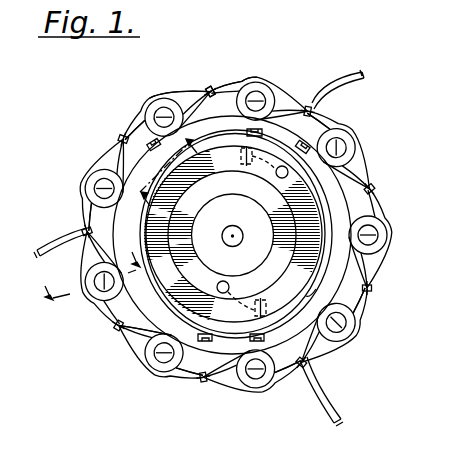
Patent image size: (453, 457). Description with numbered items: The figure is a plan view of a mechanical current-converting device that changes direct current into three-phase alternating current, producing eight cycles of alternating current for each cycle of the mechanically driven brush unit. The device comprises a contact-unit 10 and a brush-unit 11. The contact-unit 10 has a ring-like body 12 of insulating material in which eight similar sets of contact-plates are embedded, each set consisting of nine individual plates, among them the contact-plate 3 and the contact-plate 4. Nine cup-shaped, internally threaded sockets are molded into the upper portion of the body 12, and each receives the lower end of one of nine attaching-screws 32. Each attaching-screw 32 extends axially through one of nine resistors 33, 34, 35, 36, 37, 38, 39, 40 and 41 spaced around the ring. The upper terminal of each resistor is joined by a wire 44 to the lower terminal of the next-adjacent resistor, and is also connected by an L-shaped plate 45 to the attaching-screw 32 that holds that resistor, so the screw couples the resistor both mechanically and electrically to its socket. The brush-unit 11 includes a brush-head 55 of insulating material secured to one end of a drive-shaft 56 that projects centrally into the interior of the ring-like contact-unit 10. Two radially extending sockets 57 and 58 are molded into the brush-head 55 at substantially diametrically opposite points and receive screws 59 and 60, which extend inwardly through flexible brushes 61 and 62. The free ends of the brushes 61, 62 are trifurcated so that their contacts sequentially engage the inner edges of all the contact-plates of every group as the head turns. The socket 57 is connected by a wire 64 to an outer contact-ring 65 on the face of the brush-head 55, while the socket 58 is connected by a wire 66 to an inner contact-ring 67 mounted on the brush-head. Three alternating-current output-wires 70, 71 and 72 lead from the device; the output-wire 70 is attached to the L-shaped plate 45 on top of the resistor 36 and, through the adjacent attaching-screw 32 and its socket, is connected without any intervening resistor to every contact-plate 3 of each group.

The contact-unit 10 is at (211, 82).
The brush-unit 11 is at (319, 284).
The ring-like body 12 is at (216, 87).
The attaching-screw 32 is at (165, 98).
The resistor 33 is at (140, 337).
The resistor 34 is at (88, 212).
The resistor 35 is at (150, 128).
The resistor 36 is at (246, 79).
The resistor 37 is at (330, 115).
The resistor 38 is at (390, 215).
The resistor 39 is at (374, 307).
The resistor 40 is at (287, 380).
The resistor 41 is at (184, 384).
The wire 44 is at (100, 167).
The L-shaped plate 45 is at (122, 148).
The brush-head 55 is at (158, 311).
The drive-shaft 56 is at (242, 228).
The socket 57 is at (240, 157).
The socket 58 is at (262, 310).
The screw 59 is at (263, 134).
The screw 60 is at (216, 341).
The flexible brush 61 is at (215, 128).
The flexible brush 62 is at (269, 335).
The wire 64 is at (270, 172).
The outer contact-ring 65 is at (322, 215).
The wire 66 is at (230, 287).
The inner contact-ring 67 is at (271, 259).
The alternating-current output-wire 70 is at (331, 84).
The alternating-current output-wire 71 is at (339, 405).
The alternating-current output-wire 72 is at (56, 239).
The contact-plate 3 is at (87, 266).
The contact-plate 4 is at (171, 183).